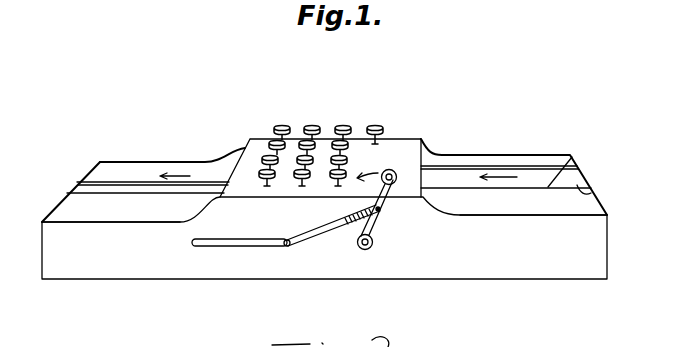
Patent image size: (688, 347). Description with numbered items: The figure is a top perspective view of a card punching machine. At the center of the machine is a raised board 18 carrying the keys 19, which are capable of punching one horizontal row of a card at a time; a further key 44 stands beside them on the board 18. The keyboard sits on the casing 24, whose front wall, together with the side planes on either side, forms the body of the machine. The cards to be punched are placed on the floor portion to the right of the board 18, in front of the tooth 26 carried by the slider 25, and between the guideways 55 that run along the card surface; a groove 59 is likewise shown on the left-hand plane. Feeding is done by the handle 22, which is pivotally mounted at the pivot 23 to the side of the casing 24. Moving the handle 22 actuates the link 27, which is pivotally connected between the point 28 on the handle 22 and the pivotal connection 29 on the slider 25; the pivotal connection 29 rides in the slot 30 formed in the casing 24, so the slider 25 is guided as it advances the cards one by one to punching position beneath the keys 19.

The board 18 is at (410, 143).
The keys 19 is at (344, 122).
The handle 22 is at (370, 232).
The pivot 23 is at (373, 250).
The casing 24 is at (255, 267).
The slider 25 is at (572, 157).
The tooth 26 is at (588, 191).
The link 27 is at (333, 223).
The pivot point 28 is at (381, 210).
The pivotal connection 29 is at (288, 238).
The slot 30 is at (233, 238).
The key 44 is at (383, 123).
The guideways 55 is at (492, 257).
The groove 59 is at (88, 187).